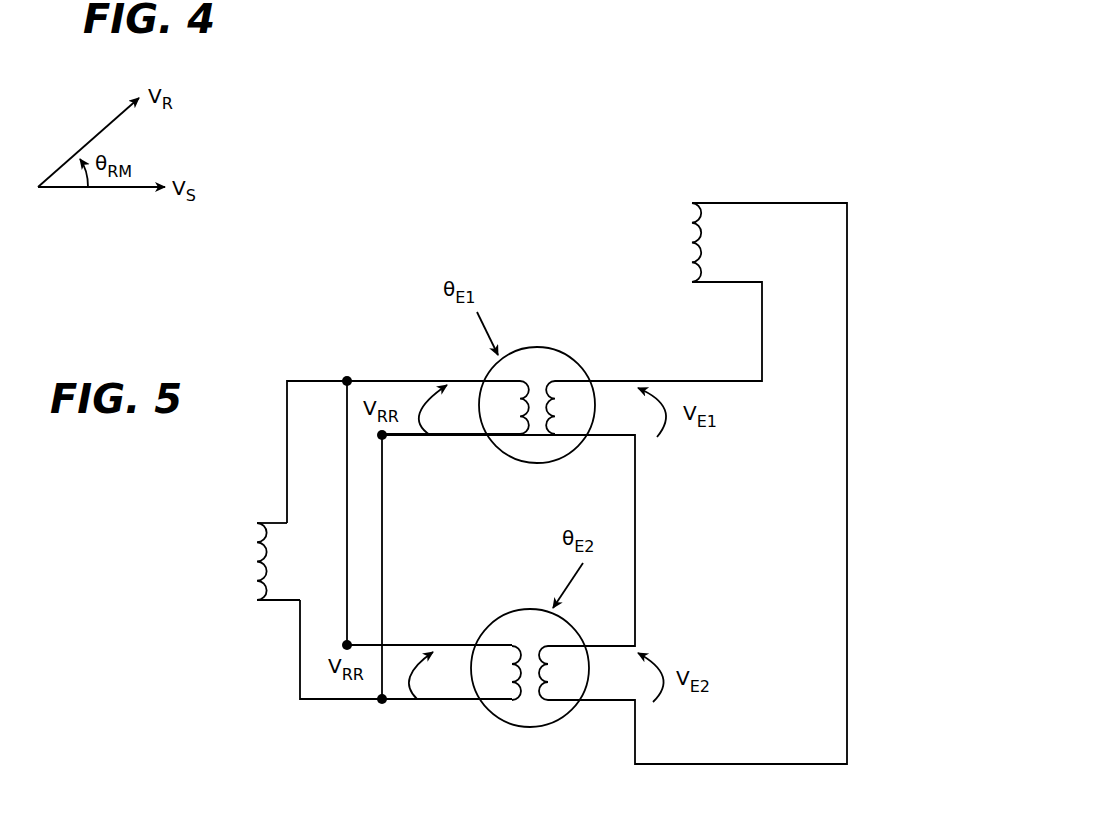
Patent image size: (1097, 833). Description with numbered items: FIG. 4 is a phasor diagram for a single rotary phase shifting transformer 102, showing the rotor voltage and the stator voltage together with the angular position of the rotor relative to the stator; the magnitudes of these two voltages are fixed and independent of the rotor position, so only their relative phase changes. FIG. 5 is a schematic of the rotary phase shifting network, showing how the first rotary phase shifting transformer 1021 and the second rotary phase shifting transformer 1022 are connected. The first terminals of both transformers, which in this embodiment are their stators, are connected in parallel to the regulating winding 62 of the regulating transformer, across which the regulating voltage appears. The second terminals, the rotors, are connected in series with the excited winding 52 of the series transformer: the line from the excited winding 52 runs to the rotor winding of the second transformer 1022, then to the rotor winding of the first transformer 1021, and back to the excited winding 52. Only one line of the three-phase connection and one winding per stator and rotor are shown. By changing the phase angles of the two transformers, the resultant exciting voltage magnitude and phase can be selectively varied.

The excited winding 52 is at (702, 223).
The regulating winding 62 is at (267, 600).
The rotary phase shifting transformer 102 is at (547, 541).
The first rotary phase shifting transformer 1021 is at (557, 348).
The second rotary phase shifting transformer 1022 is at (525, 727).